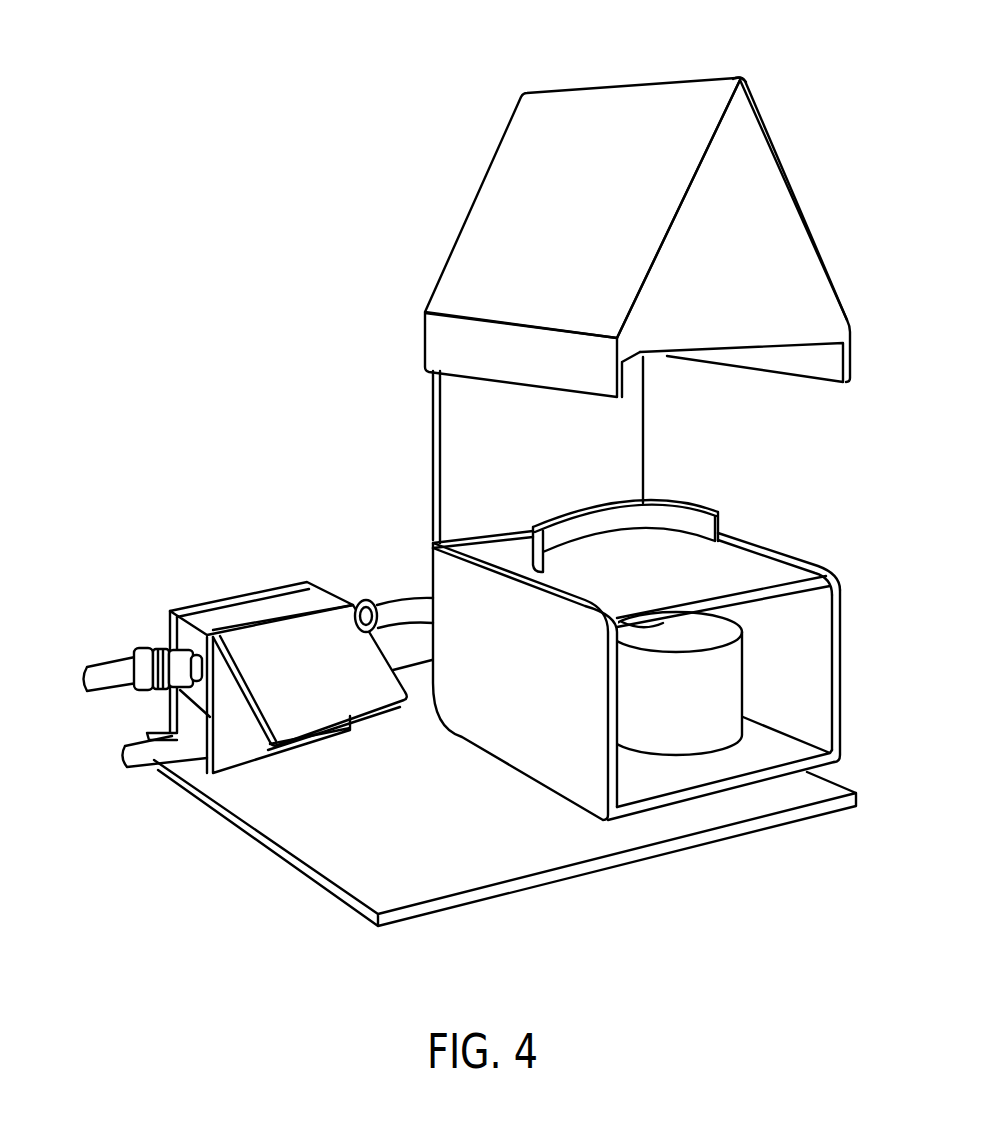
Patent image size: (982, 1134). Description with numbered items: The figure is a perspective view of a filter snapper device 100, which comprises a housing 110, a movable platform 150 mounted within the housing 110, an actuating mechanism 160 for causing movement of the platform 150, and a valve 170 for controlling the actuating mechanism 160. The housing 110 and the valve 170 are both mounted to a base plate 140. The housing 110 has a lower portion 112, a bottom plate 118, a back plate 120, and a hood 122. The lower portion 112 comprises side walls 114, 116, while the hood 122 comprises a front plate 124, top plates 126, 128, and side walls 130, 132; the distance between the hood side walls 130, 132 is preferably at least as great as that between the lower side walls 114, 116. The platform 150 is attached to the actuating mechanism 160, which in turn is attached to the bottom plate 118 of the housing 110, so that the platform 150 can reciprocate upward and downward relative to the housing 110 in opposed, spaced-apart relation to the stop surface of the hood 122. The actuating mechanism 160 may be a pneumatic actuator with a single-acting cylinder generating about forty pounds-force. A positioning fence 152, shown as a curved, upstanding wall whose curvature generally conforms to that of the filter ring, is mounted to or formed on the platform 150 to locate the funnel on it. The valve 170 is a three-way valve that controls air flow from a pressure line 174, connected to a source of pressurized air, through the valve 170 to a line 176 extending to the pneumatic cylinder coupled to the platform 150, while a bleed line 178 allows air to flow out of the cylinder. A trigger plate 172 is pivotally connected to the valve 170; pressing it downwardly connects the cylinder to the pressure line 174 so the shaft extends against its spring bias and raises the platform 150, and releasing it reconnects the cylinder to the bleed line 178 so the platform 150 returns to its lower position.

The filter snapper device 100 is at (283, 402).
The housing 110 is at (852, 258).
The lower portion 112 is at (849, 586).
The side wall 114 is at (842, 726).
The side wall 116 is at (558, 753).
The bottom plate 118 is at (677, 797).
The back plate 120 is at (453, 483).
The hood 122 is at (752, 78).
The front plate 124 is at (755, 282).
The top plate 126 is at (783, 167).
The top plate 128 is at (483, 230).
The side wall 130 is at (850, 362).
The side wall 132 is at (440, 352).
The base plate 140 is at (497, 900).
The movable platform 150 is at (748, 577).
The positioning fence 152 is at (717, 505).
The actuating mechanism 160 is at (757, 680).
The valve 170 is at (237, 578).
The trigger plate 172 is at (360, 695).
The pressure line 174 is at (110, 662).
The line 176 is at (398, 609).
The bleed line 178 is at (153, 766).